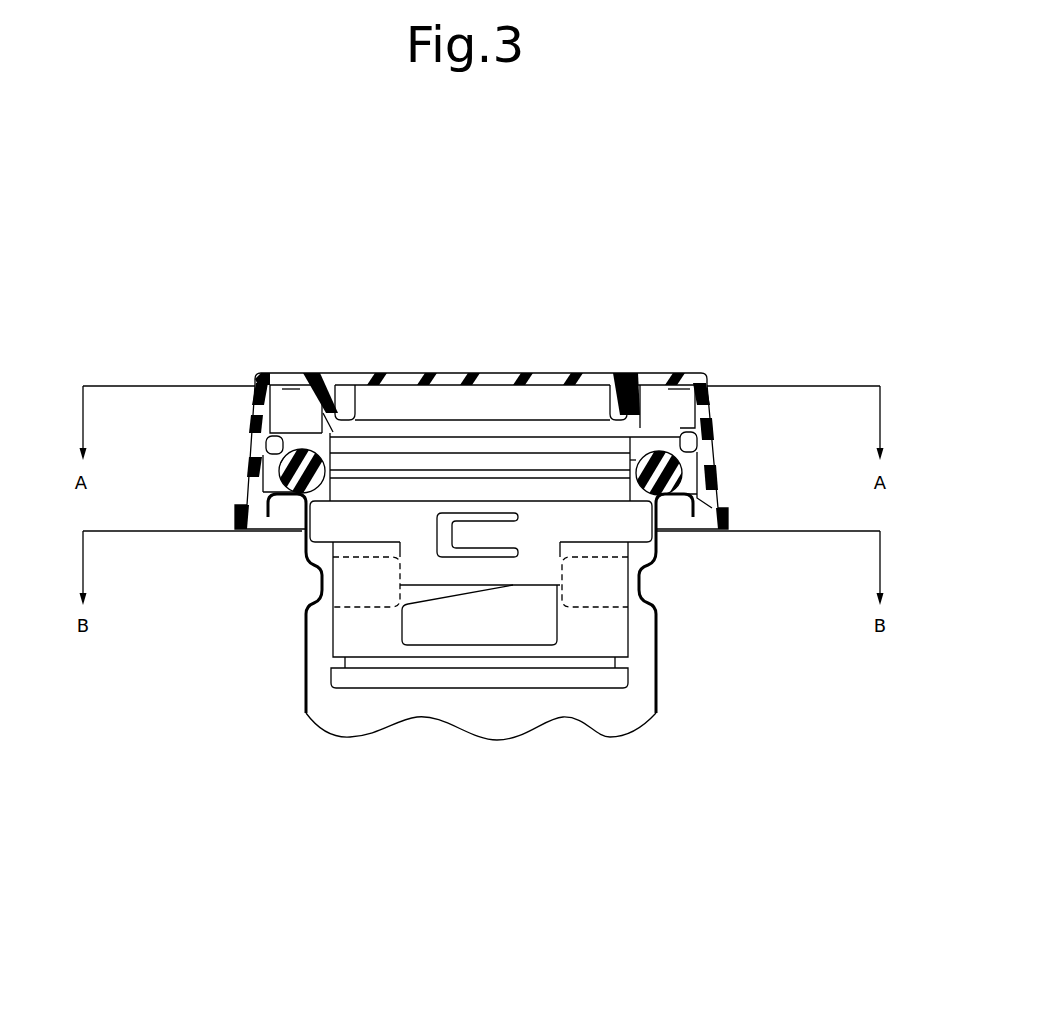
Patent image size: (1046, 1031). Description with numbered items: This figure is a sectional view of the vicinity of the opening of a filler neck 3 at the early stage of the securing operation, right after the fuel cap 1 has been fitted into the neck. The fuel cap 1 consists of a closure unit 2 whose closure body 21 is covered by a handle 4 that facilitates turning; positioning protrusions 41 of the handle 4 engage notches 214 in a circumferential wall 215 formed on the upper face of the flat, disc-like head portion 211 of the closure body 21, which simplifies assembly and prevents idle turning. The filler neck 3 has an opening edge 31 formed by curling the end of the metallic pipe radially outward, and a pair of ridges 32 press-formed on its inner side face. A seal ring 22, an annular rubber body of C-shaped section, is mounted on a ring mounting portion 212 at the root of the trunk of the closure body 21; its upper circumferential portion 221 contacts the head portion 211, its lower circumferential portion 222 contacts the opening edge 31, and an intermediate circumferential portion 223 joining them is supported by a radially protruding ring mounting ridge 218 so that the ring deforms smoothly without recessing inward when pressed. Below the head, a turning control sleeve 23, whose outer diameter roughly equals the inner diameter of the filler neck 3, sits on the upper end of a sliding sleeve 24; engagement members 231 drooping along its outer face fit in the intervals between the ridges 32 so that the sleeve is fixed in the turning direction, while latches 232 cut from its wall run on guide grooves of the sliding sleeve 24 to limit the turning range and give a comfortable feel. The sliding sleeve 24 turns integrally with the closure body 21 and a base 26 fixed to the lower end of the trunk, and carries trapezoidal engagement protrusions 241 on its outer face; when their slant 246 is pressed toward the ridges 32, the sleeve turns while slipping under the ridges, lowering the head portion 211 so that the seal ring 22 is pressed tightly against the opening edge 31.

The fuel cap 1 is at (482, 350).
The closure unit 2 is at (574, 659).
The filler neck 3 is at (519, 719).
The handle 4 is at (519, 361).
The closure body 21 is at (283, 413).
The seal ring 22 is at (362, 477).
The turning control sleeve 23 is at (397, 548).
The sliding sleeve 24 is at (630, 628).
The base 26 is at (369, 686).
The opening edge 31 is at (283, 493).
The ridges 32 is at (322, 578).
The positioning protrusions 41 is at (340, 400).
The head portion 211 is at (541, 433).
The ring mounting portion 212 is at (443, 463).
The notches 214 is at (307, 430).
The circumferential wall 215 is at (391, 430).
The ring mounting ridge 218 is at (300, 438).
The upper circumferential portion 221 is at (698, 440).
The lower circumferential portion 222 is at (672, 493).
The intermediate circumferential portion 223 is at (682, 474).
The engagement members 231 is at (425, 562).
The latches 232 is at (462, 537).
The engagement protrusions 241 is at (537, 627).
The slant 246 is at (434, 603).